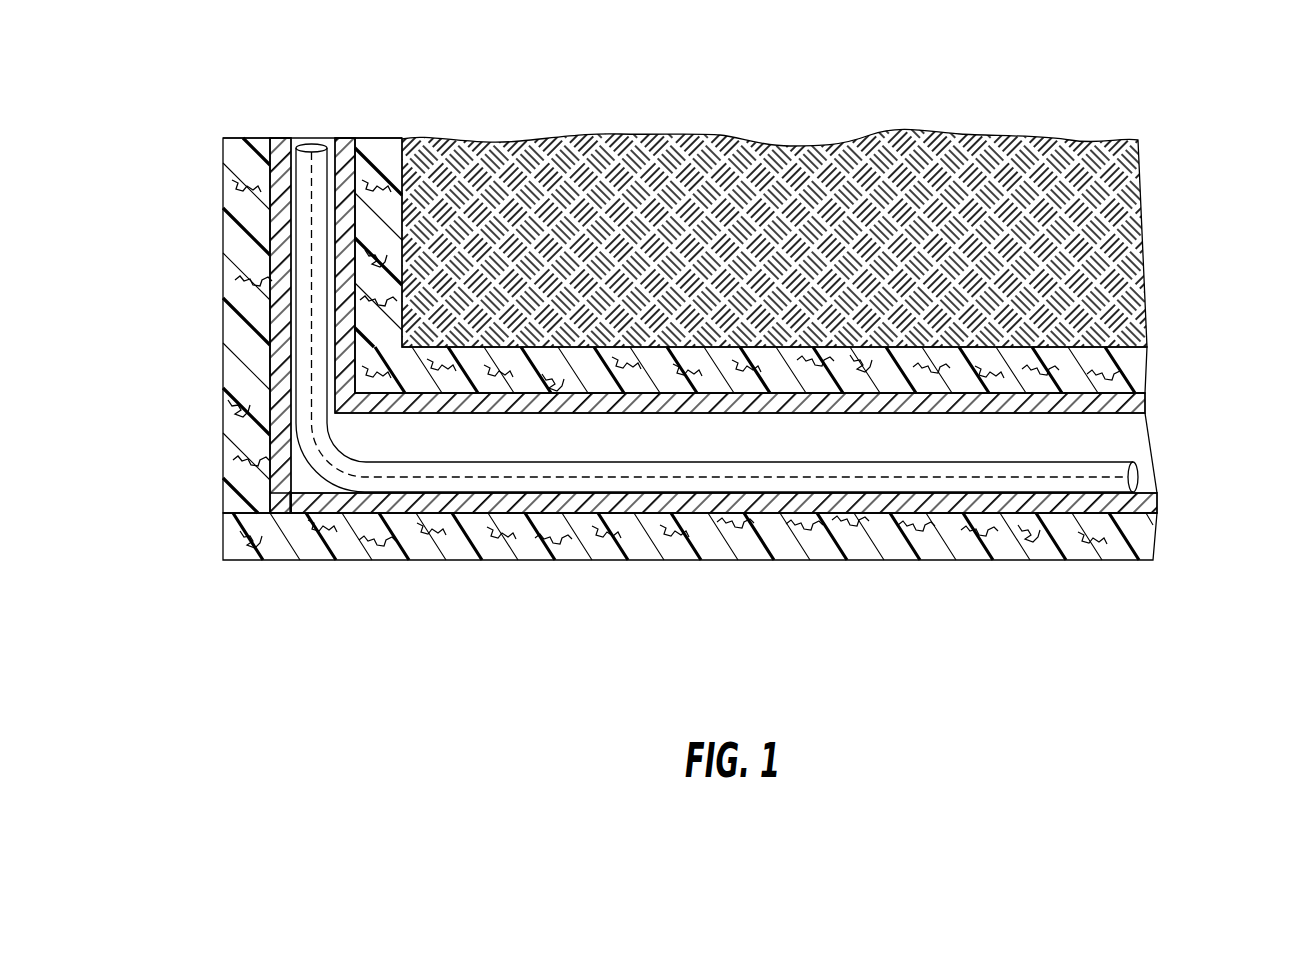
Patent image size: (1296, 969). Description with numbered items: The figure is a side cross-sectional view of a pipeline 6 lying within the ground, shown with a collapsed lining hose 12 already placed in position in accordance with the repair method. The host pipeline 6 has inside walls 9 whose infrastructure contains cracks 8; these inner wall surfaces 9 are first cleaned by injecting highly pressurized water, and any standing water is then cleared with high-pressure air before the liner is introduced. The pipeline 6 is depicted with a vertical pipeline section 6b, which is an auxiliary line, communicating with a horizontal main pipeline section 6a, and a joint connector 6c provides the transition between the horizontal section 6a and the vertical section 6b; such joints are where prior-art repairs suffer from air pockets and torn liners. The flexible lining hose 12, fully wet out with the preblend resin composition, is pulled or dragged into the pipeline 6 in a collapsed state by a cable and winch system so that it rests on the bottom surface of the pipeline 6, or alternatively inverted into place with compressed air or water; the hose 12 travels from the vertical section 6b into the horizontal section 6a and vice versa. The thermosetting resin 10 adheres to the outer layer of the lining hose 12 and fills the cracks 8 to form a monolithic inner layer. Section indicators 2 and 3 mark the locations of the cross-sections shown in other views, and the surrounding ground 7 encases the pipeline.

The pipeline 6 is at (783, 356).
The horizontal pipeline section 6a is at (690, 586).
The vertical pipeline section 6b is at (242, 325).
The joint connector 6c is at (203, 545).
The concrete slab 7 is at (774, 194).
The cracks 8 is at (723, 440).
The inside wall surface 9 is at (644, 394).
The thermosetting resin 10 is at (750, 361).
The lining hose 12 is at (688, 318).
The section line 2 is at (714, 433).
The section line 3 is at (828, 83).